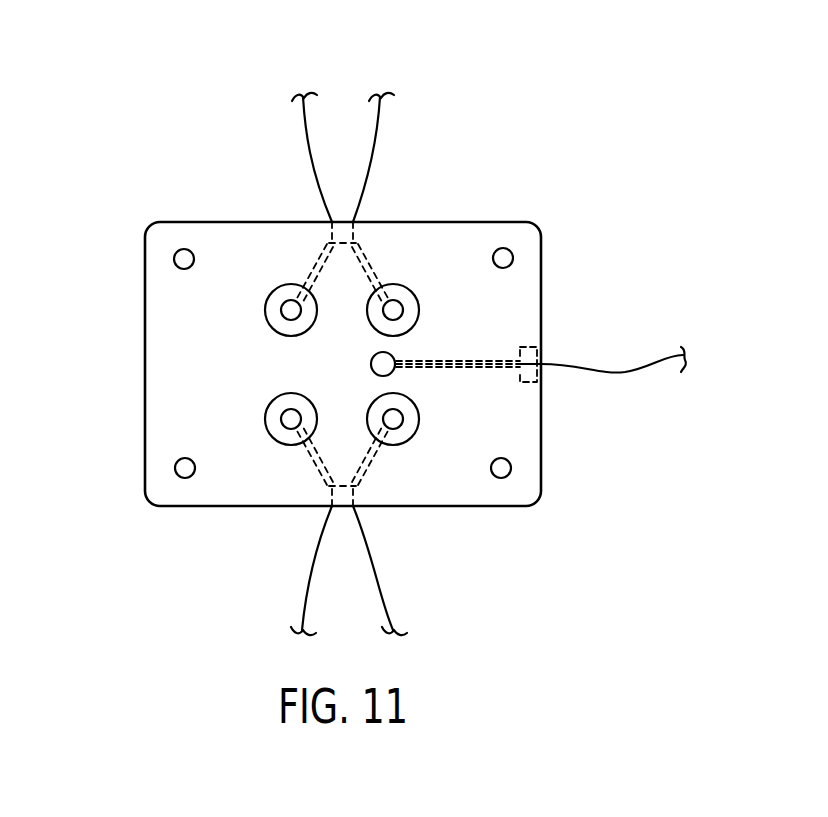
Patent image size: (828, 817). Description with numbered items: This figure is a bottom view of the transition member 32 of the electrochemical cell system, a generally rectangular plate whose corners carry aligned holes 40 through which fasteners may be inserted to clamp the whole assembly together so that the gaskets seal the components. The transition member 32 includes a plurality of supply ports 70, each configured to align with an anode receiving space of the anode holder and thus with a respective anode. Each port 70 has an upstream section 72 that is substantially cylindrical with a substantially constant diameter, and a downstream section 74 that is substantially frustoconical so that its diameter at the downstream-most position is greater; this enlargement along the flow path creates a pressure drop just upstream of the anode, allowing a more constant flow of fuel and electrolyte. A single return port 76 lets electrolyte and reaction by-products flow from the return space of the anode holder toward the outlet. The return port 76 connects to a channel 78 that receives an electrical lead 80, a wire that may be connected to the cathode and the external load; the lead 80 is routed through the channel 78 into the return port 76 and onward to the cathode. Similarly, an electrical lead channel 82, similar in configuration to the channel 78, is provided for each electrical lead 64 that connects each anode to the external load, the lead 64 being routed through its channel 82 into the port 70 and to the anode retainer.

The transition member 32 is at (128, 150).
The aligned holes 40 is at (512, 255).
The electrical lead 64 is at (306, 141).
The supply port 70 is at (354, 397).
The upstream section 72 is at (288, 310).
The downstream section 74 is at (304, 346).
The return port 76 is at (370, 360).
The channel 78 is at (484, 370).
The electrical lead 80 is at (634, 364).
The electrical lead channel 82 is at (312, 275).